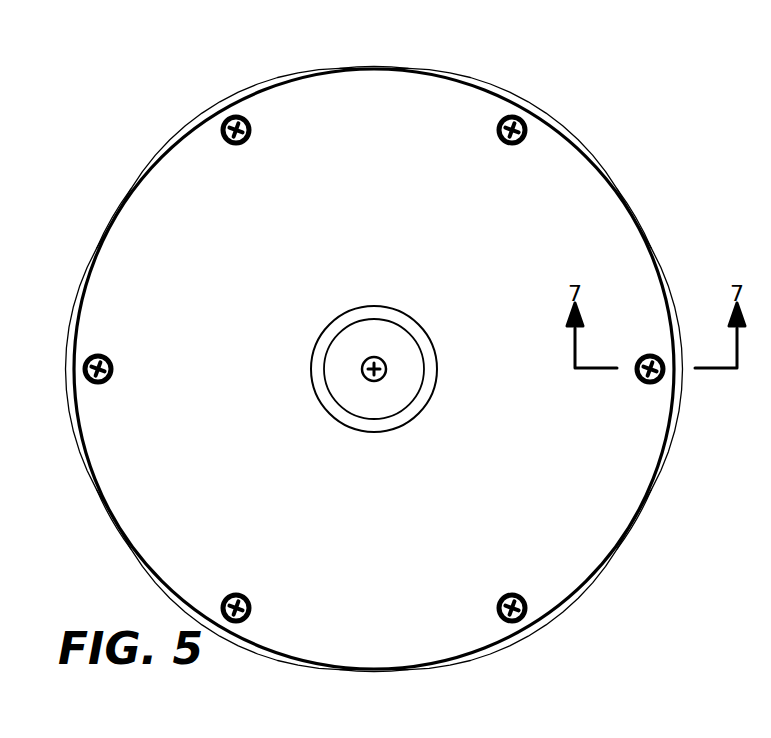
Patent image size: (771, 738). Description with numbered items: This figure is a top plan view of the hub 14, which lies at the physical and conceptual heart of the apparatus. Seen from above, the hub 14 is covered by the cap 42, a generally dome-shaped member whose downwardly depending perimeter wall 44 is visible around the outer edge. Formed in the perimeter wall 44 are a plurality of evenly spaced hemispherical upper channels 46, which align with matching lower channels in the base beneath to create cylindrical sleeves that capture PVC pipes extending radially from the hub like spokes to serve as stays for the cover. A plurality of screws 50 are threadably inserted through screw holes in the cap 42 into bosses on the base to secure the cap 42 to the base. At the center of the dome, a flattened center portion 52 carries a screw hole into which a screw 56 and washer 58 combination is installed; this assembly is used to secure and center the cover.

The hub 14 is at (620, 135).
The cap 42 is at (470, 97).
The perimeter wall 44 is at (66, 410).
The hemispherical upper channels 46 is at (376, 64).
The screws 50 is at (524, 118).
The flattened center portion 52 is at (430, 386).
The screw 56 is at (380, 360).
The washer 58 is at (405, 350).